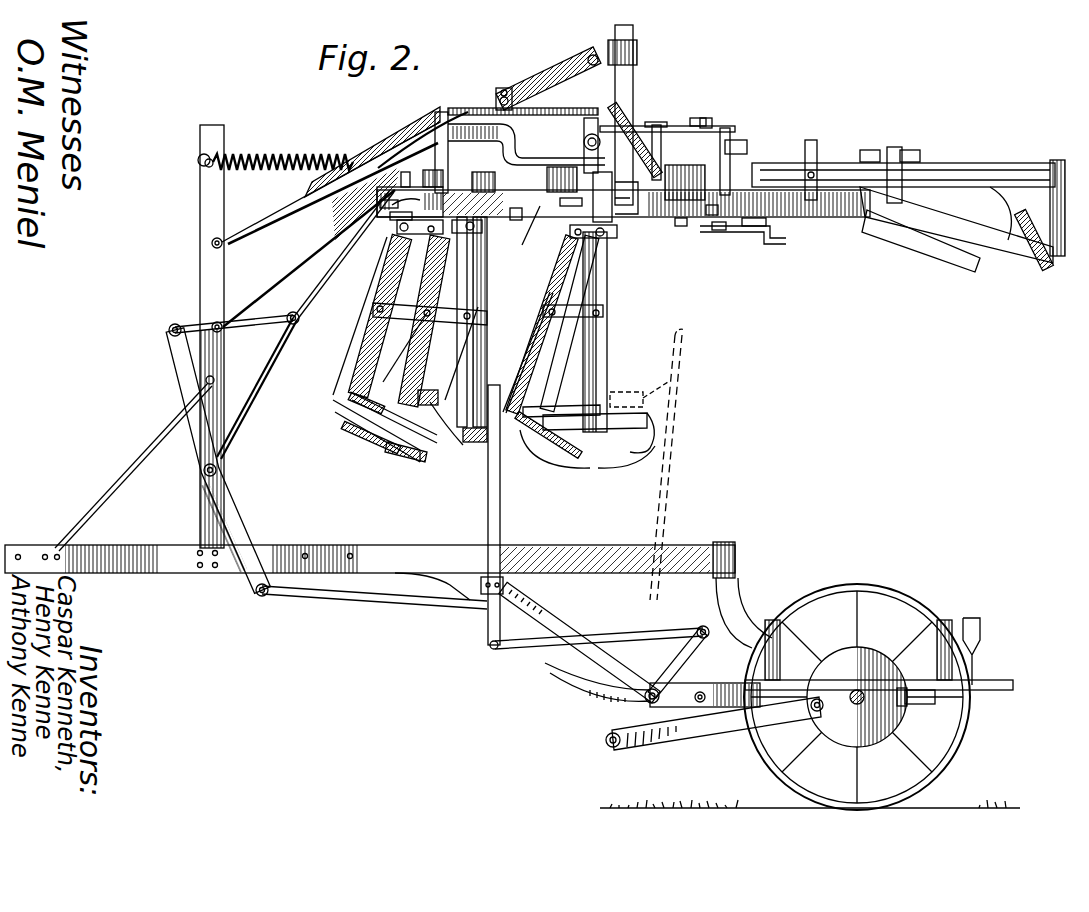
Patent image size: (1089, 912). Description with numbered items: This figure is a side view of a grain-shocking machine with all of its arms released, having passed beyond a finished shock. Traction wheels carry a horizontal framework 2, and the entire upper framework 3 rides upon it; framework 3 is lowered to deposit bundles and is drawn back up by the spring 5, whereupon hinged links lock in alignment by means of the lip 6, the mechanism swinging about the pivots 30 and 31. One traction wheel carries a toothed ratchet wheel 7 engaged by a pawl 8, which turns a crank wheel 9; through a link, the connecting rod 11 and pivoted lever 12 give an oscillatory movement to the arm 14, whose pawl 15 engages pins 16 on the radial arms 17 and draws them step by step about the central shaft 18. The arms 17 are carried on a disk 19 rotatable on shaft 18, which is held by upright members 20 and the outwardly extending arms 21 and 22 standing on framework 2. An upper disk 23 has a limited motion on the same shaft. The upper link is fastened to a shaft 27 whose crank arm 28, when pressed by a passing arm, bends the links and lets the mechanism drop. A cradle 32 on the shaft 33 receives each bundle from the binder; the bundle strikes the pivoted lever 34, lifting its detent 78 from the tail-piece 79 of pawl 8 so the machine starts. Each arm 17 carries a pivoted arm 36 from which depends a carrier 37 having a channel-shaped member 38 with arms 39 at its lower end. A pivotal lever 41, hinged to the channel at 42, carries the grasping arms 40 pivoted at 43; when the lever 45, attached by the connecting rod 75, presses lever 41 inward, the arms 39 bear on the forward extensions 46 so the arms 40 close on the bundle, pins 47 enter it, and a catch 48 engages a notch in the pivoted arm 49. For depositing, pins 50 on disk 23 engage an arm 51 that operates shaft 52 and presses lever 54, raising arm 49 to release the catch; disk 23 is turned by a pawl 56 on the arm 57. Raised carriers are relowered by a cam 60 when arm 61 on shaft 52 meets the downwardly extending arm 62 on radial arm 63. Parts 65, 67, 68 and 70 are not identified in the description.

The framework 2 is at (588, 547).
The framework 3 is at (710, 218).
The spring 5 is at (300, 157).
The lip 6 is at (299, 322).
The toothed wheel 7 is at (905, 592).
The pawl 8 is at (895, 672).
The crank wheel 9 is at (316, 284).
The connecting rod 11 is at (388, 600).
The pivoted lever 12 is at (222, 480).
The rotatably mounted arm 14 is at (565, 109).
The pawl 15 is at (205, 305).
The pins 16 is at (395, 190).
The radial arms 17 is at (750, 228).
The central shaft 18 is at (634, 86).
The disk 19 is at (645, 222).
The upright members 20 is at (226, 201).
The outwardly extending arm 21 is at (268, 292).
The outwardly extending arm 22 is at (552, 80).
The upper disk 23 is at (700, 158).
The shaft 27 is at (368, 160).
The crank arm 28 is at (392, 220).
The pivot 30 is at (213, 376).
The pivot 31 is at (211, 244).
The cradle 32 is at (665, 480).
The shaft 33 is at (640, 702).
The pivoted lever 34 is at (980, 633).
The arm 36 is at (490, 196).
The carrier 37 is at (607, 352).
The channel-shaped member 38 is at (608, 372).
The arms 39 is at (470, 442).
The arms 40 is at (428, 455).
The pivotal lever 41 is at (530, 345).
The hinge 42 is at (398, 238).
The pivot 43 is at (343, 380).
The lever 45 is at (488, 487).
The forward extensions 46 is at (345, 404).
The pins 47 is at (486, 598).
The catch 48 is at (373, 312).
The pivoted arm 49 is at (410, 335).
The pins 50 is at (527, 241).
The arm 51 is at (565, 152).
The shaft 52 is at (735, 162).
The lever 54 is at (655, 236).
The pawl 56 is at (664, 130).
The arm 57 is at (502, 95).
The cam 60 is at (718, 232).
The arm 61 is at (614, 102).
The downwardly extending arm 62 is at (746, 141).
The radial arm 63 is at (707, 118).
The lug 65 is at (682, 227).
The block 67 is at (565, 195).
The block 68 is at (698, 118).
The bar 70 is at (680, 726).
The connecting rod 75 is at (540, 644).
The detent 78 is at (935, 704).
The tail-piece 79 is at (915, 712).